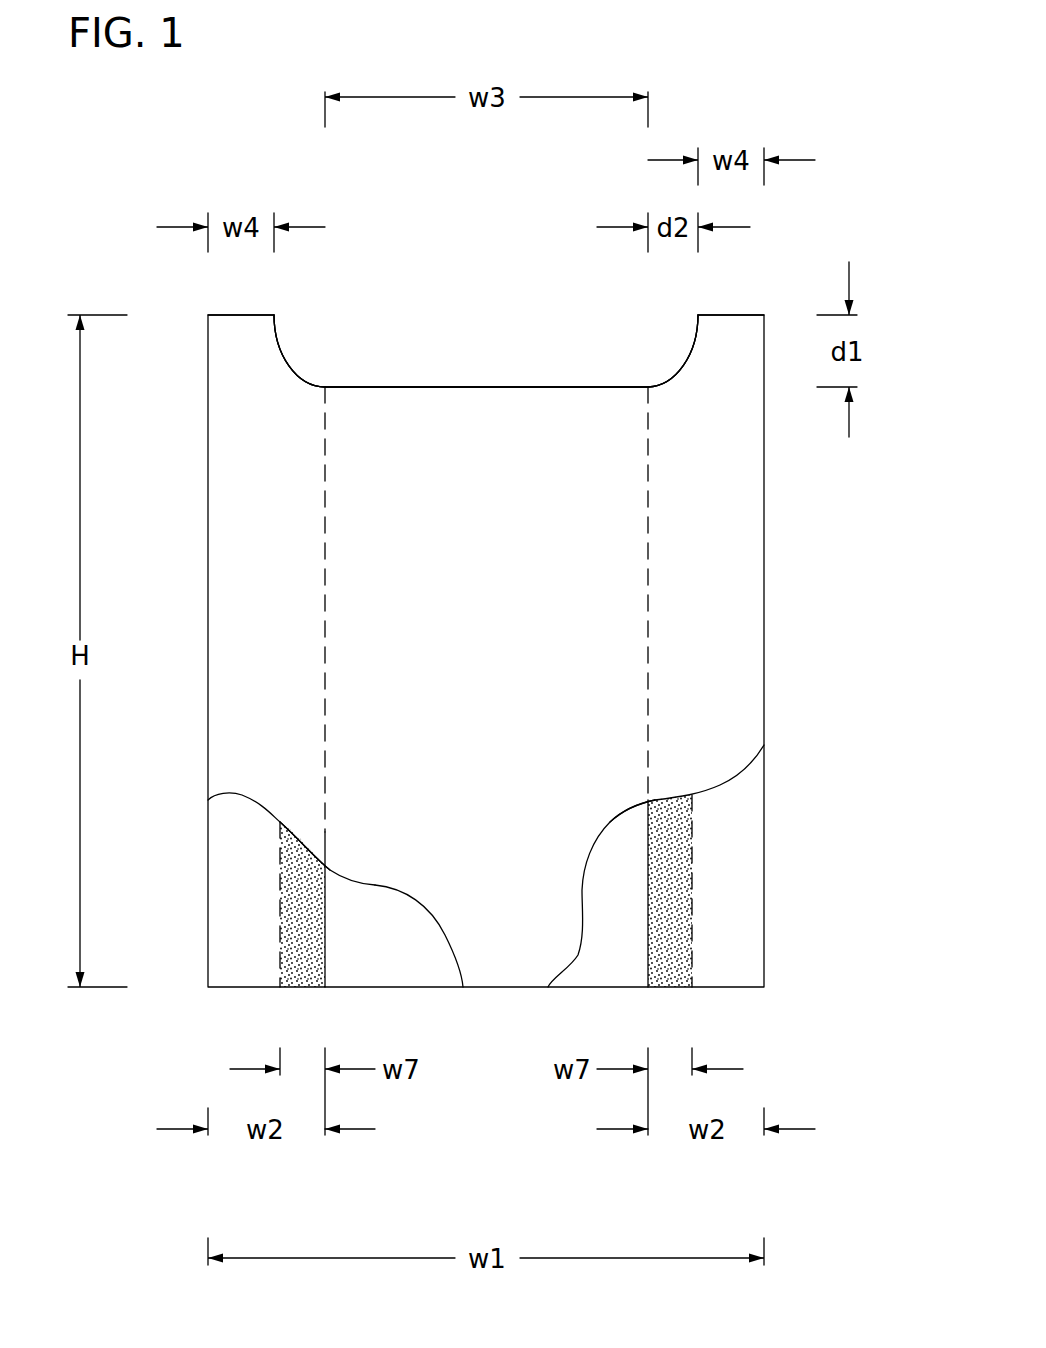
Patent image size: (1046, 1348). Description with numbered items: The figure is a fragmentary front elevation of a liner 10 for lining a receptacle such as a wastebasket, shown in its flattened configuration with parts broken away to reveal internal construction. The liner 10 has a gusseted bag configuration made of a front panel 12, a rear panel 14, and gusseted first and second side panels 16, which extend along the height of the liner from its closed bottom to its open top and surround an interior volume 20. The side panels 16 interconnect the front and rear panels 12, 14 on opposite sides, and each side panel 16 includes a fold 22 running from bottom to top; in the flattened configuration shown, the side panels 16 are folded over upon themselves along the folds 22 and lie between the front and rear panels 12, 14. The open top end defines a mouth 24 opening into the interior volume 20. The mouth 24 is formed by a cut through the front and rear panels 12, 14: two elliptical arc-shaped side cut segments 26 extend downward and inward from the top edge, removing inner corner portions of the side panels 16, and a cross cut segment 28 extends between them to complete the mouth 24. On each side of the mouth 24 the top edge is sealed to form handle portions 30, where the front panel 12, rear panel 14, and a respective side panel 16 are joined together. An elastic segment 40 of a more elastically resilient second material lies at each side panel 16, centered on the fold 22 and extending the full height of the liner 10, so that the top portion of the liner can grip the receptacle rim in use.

The liner 10 is at (452, 1126).
The front panel 12 is at (620, 562).
The rear panel 14 is at (580, 973).
The side panels 16 is at (235, 913).
The interior volume 20 is at (396, 958).
The fold 22 is at (325, 892).
The mouth 24 is at (466, 358).
The side cut segments 26 is at (290, 357).
The cross cut segment 28 is at (552, 385).
The handle portions 30 is at (242, 336).
The elastic segment 40 is at (302, 978).